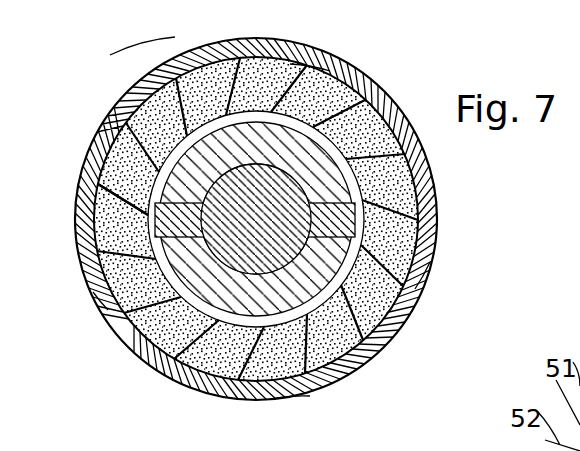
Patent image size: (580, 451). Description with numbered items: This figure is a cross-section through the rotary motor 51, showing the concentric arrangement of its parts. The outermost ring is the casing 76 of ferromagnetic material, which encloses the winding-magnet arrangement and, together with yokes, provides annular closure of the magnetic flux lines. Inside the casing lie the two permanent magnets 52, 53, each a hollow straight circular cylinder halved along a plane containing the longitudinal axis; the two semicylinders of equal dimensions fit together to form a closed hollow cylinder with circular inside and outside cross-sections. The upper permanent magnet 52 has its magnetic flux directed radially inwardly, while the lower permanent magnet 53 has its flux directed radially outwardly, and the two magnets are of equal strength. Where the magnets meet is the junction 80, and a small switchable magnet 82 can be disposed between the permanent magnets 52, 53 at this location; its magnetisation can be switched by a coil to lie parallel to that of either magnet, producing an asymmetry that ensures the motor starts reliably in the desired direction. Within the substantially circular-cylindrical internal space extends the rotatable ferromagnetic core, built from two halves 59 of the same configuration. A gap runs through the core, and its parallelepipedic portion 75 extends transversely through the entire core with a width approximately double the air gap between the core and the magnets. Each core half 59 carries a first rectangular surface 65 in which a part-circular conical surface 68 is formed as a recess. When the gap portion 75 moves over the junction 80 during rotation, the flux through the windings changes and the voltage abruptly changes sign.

The rotary motor 51 is at (140, 56).
The upper permanent magnet 52 is at (308, 63).
The lower permanent magnet 53 is at (293, 390).
The half of the core 59 is at (160, 128).
The first rectangular surface 65 is at (417, 154).
The part-circular conical surface 68 is at (245, 150).
The parallelepipedic portion of the gap 75 is at (101, 298).
The casing 76 is at (382, 92).
The junction between the two permanent magnets 80 is at (420, 274).
The switchable magnet 82 is at (100, 196).